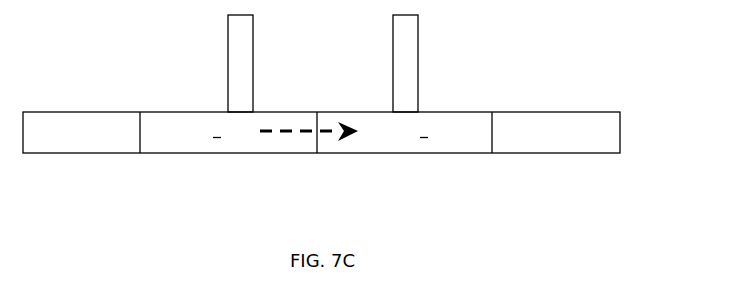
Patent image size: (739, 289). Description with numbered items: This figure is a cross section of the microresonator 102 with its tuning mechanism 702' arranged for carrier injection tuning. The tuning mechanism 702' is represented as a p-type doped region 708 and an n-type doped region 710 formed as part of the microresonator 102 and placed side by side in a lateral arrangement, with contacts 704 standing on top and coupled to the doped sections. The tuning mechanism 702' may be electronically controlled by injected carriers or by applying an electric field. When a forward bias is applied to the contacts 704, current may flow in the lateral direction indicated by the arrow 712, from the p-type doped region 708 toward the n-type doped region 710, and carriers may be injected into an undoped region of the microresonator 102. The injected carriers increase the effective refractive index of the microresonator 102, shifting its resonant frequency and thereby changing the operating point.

The tuning mechanism 702' is at (366, 106).
The microresonator 102 is at (620, 132).
The contacts 704 is at (393, 63).
The p-type doped region 708 is at (169, 132).
The n-type doped region 710 is at (463, 133).
The arrow 712 is at (268, 134).